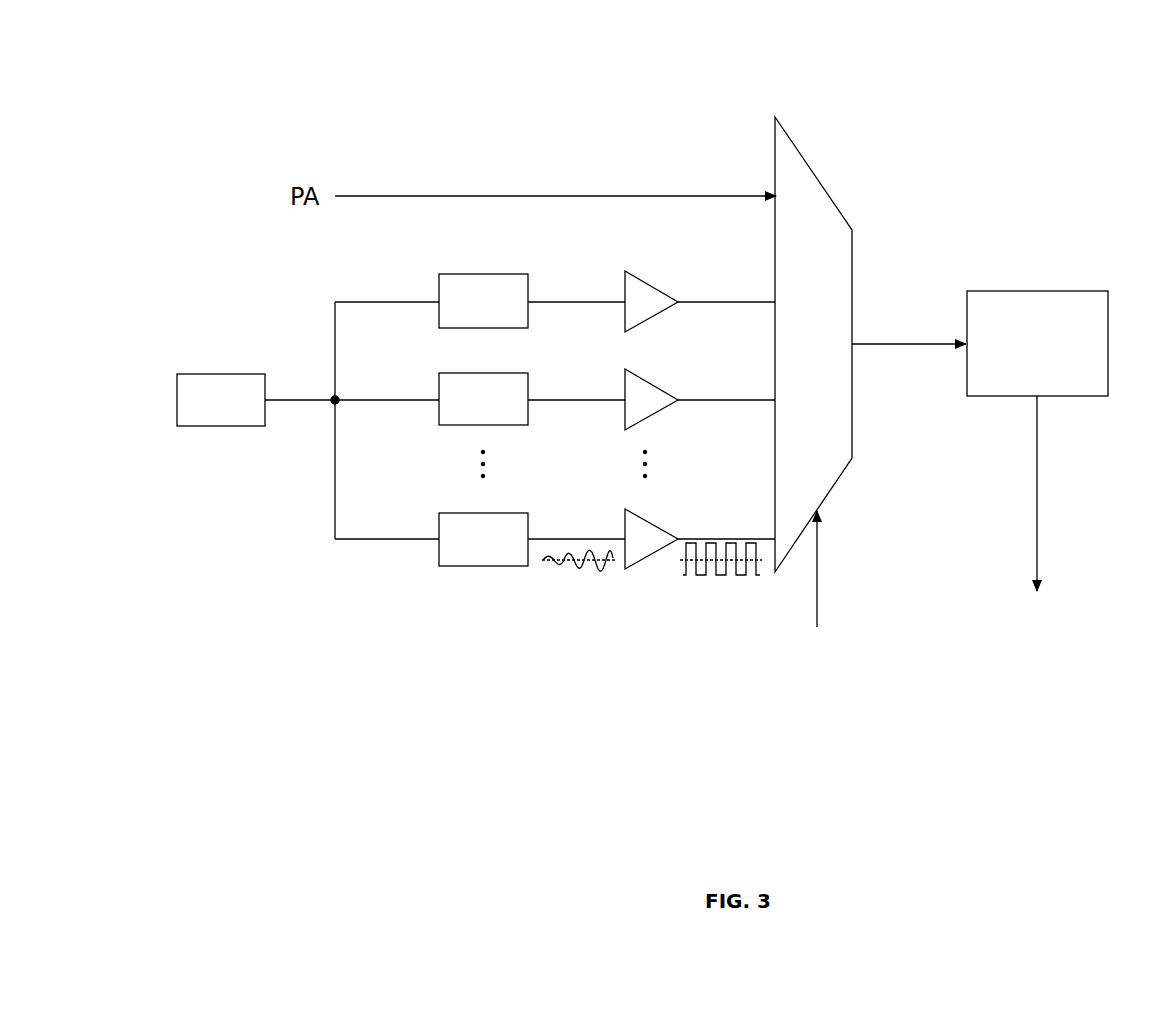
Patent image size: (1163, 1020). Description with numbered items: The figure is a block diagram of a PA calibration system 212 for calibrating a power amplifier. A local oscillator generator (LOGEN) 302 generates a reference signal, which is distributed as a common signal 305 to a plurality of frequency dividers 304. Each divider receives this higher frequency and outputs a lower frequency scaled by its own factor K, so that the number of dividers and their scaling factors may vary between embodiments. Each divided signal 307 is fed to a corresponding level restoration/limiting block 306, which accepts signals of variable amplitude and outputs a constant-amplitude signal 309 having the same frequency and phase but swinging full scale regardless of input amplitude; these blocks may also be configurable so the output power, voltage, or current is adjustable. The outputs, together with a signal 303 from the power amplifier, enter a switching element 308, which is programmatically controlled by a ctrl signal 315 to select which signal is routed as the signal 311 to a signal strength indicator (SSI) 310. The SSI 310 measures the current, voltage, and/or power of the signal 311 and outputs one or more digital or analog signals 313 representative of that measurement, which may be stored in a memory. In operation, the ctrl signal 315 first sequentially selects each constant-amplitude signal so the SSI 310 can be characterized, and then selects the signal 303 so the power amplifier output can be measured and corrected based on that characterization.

The PA calibration system 212 is at (226, 80).
The local oscillator generator (LOGEN) 302 is at (194, 374).
The signal 303 is at (434, 196).
The frequency dividers 304 is at (446, 274).
The local oscillator signal 305 is at (323, 400).
The level restoration/limiting blocks 306 is at (648, 283).
The signal 307 is at (582, 302).
The switching element 308 is at (803, 161).
The signal 309 is at (744, 302).
The signal strength indicator (SSI) 310 is at (1092, 291).
The signal 311 is at (925, 344).
The signals 313 is at (1036, 473).
The ctrl signal 315 is at (818, 584).